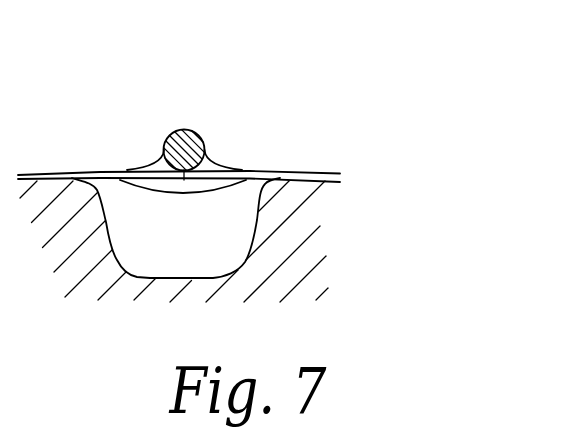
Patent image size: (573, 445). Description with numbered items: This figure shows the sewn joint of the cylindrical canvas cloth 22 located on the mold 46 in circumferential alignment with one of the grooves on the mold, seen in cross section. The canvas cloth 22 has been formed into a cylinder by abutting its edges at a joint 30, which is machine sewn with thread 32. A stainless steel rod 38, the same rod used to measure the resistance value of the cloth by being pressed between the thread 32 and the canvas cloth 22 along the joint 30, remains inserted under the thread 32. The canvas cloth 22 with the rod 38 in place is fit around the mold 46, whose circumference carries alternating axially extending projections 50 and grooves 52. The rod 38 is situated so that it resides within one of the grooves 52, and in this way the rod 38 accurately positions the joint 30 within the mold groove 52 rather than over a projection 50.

The canvas cloth 22 is at (325, 182).
The joint 30 is at (174, 275).
The thread 32 is at (222, 163).
The rod 38 is at (184, 148).
The mold 46 is at (288, 233).
The projection 50 is at (58, 175).
The groove 52 is at (210, 278).